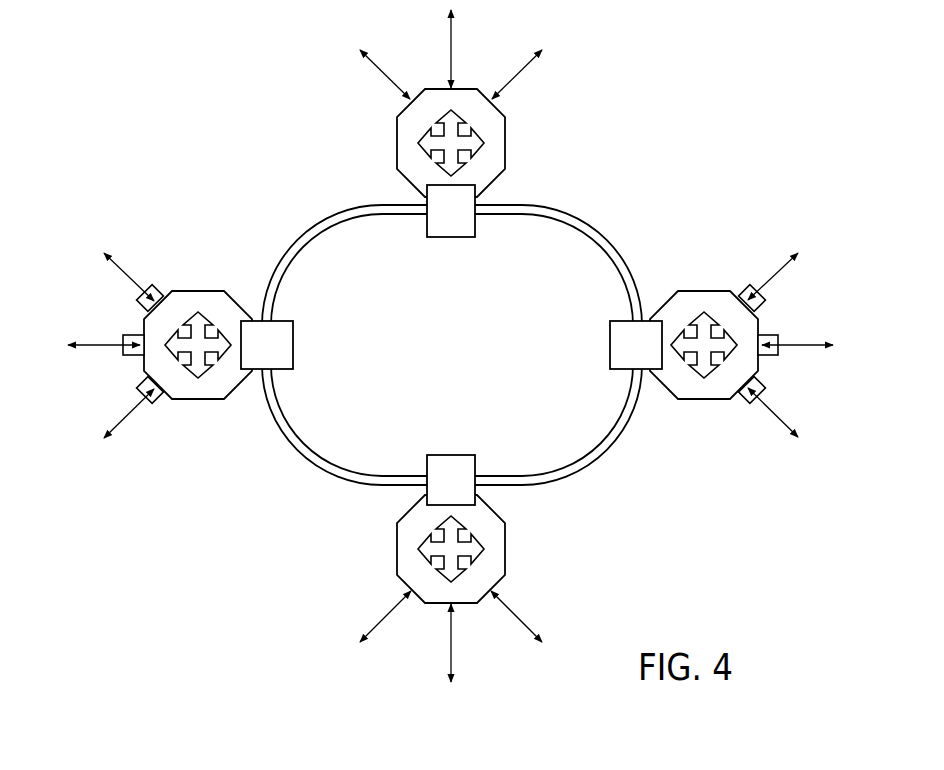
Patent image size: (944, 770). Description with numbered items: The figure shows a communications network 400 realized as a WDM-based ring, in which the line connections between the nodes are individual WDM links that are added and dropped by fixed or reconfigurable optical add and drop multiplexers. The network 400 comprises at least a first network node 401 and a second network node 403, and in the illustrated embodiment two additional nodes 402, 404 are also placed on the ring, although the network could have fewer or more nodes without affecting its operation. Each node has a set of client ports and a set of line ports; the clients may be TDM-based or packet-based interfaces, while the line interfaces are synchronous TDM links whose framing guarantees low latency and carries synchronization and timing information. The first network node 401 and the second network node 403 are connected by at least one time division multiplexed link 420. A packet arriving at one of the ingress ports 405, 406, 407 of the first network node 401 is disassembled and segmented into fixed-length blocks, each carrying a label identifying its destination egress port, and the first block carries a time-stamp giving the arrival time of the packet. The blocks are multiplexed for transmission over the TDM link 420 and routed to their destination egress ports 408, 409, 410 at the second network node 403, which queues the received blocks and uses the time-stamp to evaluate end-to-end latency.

The network 400 is at (447, 346).
The first network node 401 is at (217, 387).
The additional network node 402 is at (498, 537).
The second network node 403 is at (697, 288).
The additional network node 404 is at (497, 131).
The ingress port 405 is at (158, 288).
The ingress port 406 is at (125, 355).
The ingress port 407 is at (153, 400).
The egress port 408 is at (745, 295).
The egress port 409 is at (770, 357).
The egress port 410 is at (743, 400).
The TDM link 420 is at (352, 481).